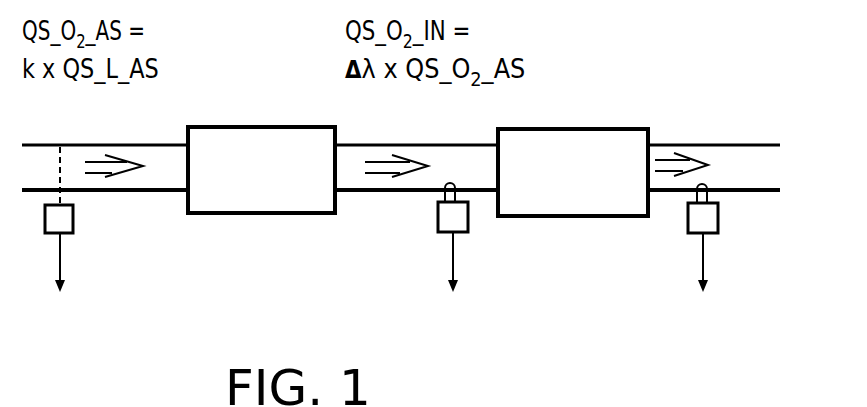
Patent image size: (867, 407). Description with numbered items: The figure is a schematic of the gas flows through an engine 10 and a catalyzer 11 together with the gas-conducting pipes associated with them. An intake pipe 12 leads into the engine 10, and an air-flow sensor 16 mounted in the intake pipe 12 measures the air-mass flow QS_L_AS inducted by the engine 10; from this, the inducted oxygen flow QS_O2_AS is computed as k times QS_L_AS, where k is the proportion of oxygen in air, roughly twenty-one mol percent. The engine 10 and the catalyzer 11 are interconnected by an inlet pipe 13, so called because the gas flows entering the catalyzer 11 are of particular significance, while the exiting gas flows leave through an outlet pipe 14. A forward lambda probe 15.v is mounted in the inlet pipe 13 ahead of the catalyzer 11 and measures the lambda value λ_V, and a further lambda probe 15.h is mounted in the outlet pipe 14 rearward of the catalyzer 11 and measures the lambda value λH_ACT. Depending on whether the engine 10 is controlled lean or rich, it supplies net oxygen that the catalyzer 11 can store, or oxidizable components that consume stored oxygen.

The engine 10 is at (261, 203).
The catalyzer 11 is at (573, 204).
The intake pipe 12 is at (105, 139).
The inlet pipe 13 is at (416, 140).
The outlet pipe 14 is at (714, 140).
The forward lambda probe 15.v is at (417, 261).
The further lambda probe 15.h is at (731, 263).
The air-flow sensor 16 is at (101, 239).